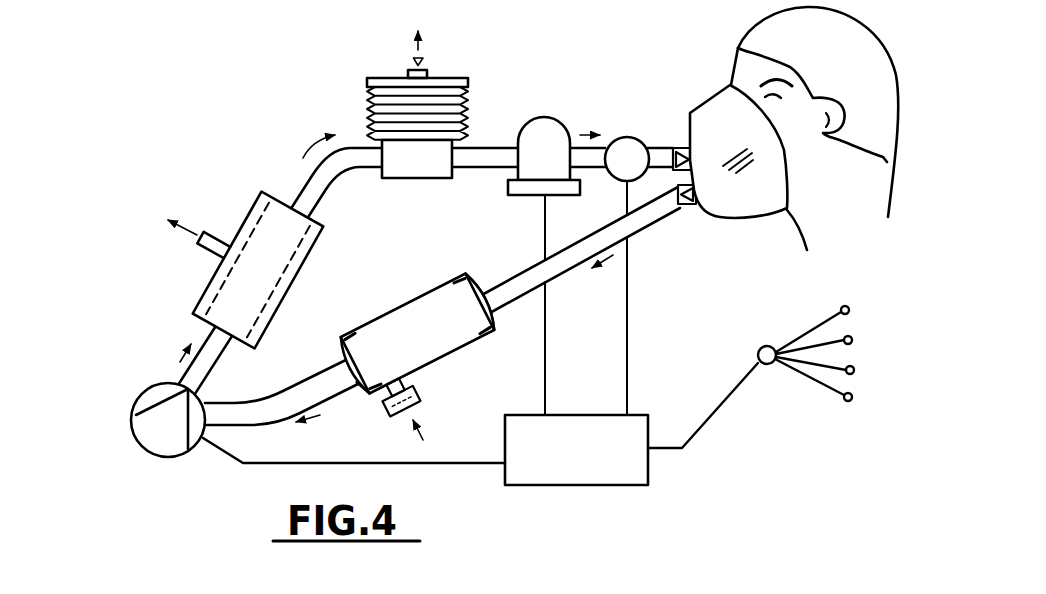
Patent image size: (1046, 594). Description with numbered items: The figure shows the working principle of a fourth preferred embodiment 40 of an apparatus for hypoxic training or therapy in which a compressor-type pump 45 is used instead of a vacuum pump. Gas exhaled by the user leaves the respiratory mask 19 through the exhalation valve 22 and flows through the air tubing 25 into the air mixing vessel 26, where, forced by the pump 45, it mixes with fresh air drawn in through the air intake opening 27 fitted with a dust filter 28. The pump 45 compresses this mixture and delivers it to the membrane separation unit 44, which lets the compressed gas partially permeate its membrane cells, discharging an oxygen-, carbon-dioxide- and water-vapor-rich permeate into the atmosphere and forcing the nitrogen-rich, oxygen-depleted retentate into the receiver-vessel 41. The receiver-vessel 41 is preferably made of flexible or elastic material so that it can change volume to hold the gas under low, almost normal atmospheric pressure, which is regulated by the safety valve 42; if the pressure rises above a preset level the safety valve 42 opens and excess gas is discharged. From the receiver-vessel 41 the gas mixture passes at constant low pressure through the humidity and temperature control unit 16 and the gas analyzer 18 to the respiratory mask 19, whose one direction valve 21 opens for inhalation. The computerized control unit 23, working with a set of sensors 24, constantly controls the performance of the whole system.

The humidity and temperature control unit 16 is at (545, 130).
The gas analyzer 18 is at (626, 137).
The respiratory mask 19 is at (722, 120).
The one direction valve 21 is at (677, 157).
The exhalation valve 22 is at (691, 204).
The computerized control unit 23 is at (590, 467).
The set of sensors 24 is at (757, 355).
The air tubing 25 is at (648, 218).
The air mixing vessel 26 is at (408, 332).
The air intake opening 27 is at (427, 396).
The dust filter 28 is at (389, 413).
The fourth preferred embodiment 40 is at (251, 113).
The receiver-vessel 41 is at (470, 115).
The safety valve 42 is at (425, 60).
The membrane separation unit 44 is at (265, 250).
The pump 45 is at (158, 422).